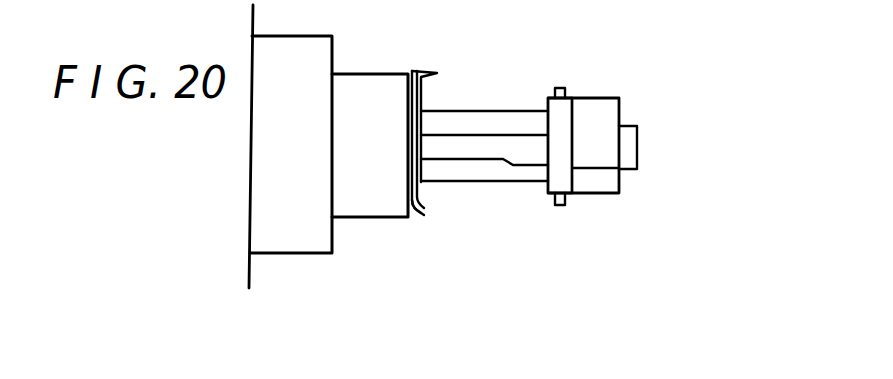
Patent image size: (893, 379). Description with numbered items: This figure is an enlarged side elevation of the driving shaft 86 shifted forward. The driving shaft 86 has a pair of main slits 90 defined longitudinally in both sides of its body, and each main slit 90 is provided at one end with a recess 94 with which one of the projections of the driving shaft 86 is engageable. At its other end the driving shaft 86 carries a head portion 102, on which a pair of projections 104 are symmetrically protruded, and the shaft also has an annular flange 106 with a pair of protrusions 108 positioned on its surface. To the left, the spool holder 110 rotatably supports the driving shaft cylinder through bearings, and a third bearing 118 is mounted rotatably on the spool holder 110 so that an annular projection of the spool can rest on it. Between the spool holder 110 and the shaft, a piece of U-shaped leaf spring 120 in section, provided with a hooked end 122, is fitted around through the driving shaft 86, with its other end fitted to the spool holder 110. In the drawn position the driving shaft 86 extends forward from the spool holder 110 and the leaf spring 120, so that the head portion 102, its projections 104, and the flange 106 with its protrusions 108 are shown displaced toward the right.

The driving shaft 86 is at (489, 103).
The main slits 90 is at (475, 147).
The recess 94 is at (528, 152).
The head portion 102 is at (620, 85).
The projections 104 is at (588, 107).
The annular flange 106 is at (563, 166).
The protrusions 108 is at (563, 206).
The spool holder 110 is at (356, 78).
The third bearing 118 is at (250, 201).
The U-shaped leaf spring 120 is at (418, 213).
The hooked end 122 is at (417, 70).